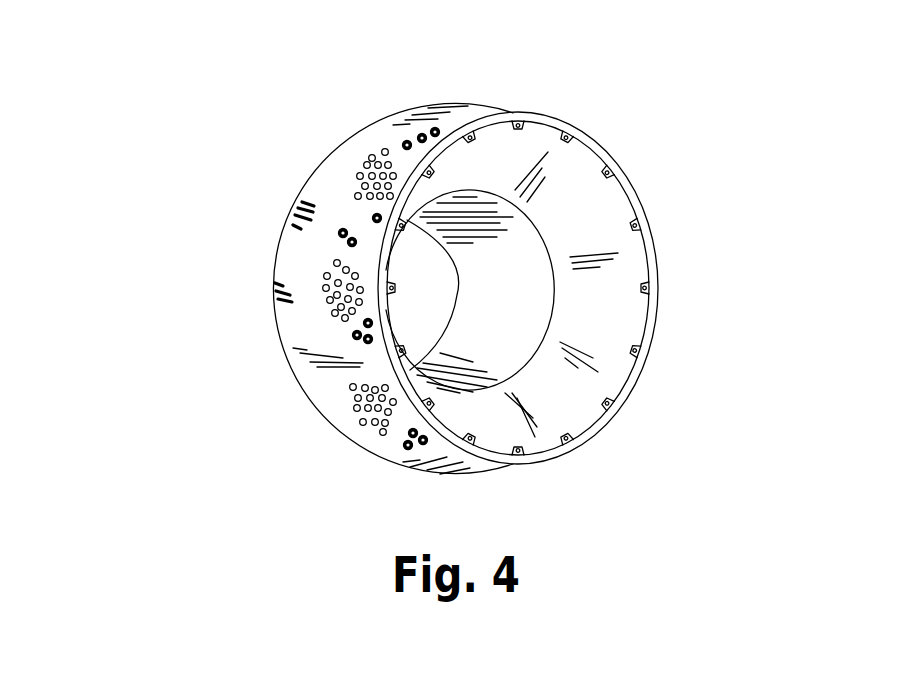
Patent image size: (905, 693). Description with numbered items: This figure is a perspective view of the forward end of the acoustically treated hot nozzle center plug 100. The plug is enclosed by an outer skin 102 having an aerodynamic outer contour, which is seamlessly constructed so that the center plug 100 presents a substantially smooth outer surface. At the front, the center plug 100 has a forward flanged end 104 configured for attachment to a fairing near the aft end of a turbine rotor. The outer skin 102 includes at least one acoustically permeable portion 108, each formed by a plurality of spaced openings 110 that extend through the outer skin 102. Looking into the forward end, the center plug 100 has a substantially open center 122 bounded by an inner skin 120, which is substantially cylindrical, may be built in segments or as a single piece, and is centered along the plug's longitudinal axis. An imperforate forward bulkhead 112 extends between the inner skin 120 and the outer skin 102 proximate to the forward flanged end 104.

The center plug 100 is at (560, 84).
The outer skin 102 is at (285, 322).
The forward flanged end 104 is at (643, 350).
The acoustically permeable portion 108 is at (345, 417).
The spaced openings 110 is at (377, 150).
The imperforate forward bulkhead 112 is at (582, 238).
The inner skin 120 is at (510, 323).
The open center 122 is at (413, 283).